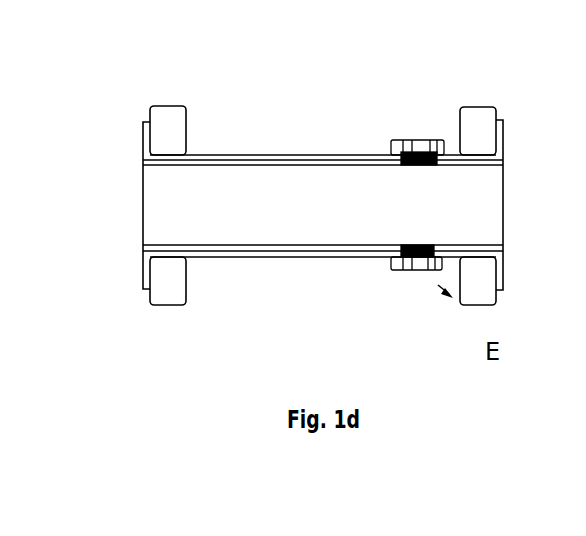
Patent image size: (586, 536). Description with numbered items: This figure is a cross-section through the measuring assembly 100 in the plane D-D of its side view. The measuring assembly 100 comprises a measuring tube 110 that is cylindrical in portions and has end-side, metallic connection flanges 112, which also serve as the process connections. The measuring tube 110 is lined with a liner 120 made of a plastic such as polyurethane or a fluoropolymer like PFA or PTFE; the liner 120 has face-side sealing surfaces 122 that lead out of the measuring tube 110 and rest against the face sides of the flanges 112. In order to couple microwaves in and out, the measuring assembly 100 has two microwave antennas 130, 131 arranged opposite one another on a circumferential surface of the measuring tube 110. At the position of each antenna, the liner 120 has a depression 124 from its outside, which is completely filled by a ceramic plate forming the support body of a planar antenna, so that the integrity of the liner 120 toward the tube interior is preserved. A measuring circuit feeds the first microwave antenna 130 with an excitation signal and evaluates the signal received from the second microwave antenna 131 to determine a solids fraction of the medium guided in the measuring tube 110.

The measuring assembly 100 is at (224, 75).
The measuring tube 110 is at (250, 154).
The connection flange 112 is at (166, 108).
The liner 120 is at (206, 167).
The sealing surface 122 is at (142, 140).
The depression 124 is at (408, 167).
The first microwave antenna 130 is at (403, 140).
The second microwave antenna 131 is at (405, 273).